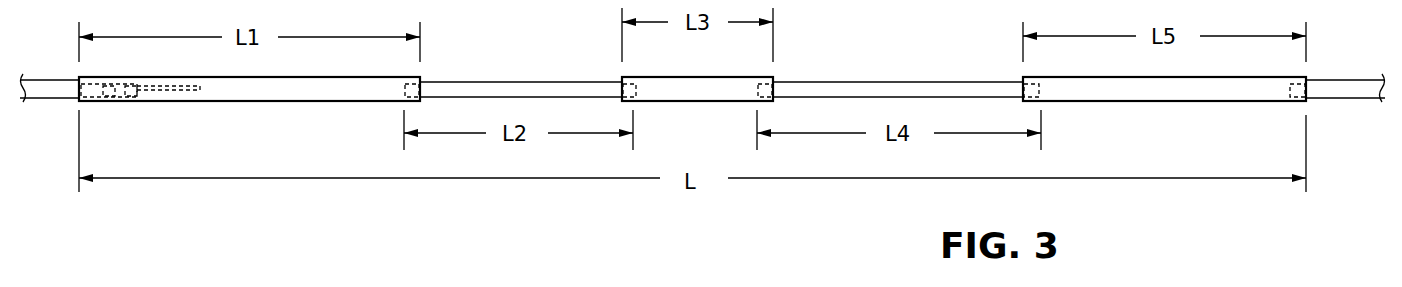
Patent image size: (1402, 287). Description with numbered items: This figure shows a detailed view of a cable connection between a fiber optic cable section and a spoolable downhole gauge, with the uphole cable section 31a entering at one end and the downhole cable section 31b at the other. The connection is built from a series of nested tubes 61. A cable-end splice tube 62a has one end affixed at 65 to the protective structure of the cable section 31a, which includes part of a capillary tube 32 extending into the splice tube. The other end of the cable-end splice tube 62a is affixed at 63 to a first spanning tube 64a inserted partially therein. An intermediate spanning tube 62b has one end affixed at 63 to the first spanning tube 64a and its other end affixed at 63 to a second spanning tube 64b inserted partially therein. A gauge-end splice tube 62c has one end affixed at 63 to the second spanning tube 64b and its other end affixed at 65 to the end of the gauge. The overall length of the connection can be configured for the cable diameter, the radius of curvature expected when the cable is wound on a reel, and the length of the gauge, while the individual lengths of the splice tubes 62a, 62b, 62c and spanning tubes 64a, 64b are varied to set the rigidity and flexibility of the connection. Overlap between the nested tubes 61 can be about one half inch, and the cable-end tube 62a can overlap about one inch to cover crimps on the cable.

The uphole cable section 31a is at (48, 78).
The downhole cable section 31b is at (1346, 79).
The capillary tube 32 is at (172, 93).
The nested tubes 61 is at (700, 121).
The cable-end splice tube 62a is at (290, 103).
The intermediate spanning tube 62b is at (700, 103).
The gauge-end splice tube 62c is at (1105, 103).
The affixed joint 63 is at (420, 79).
The first spanning tube 64a is at (520, 81).
The second spanning tube 64b is at (875, 82).
The end affixment 65 is at (79, 102).